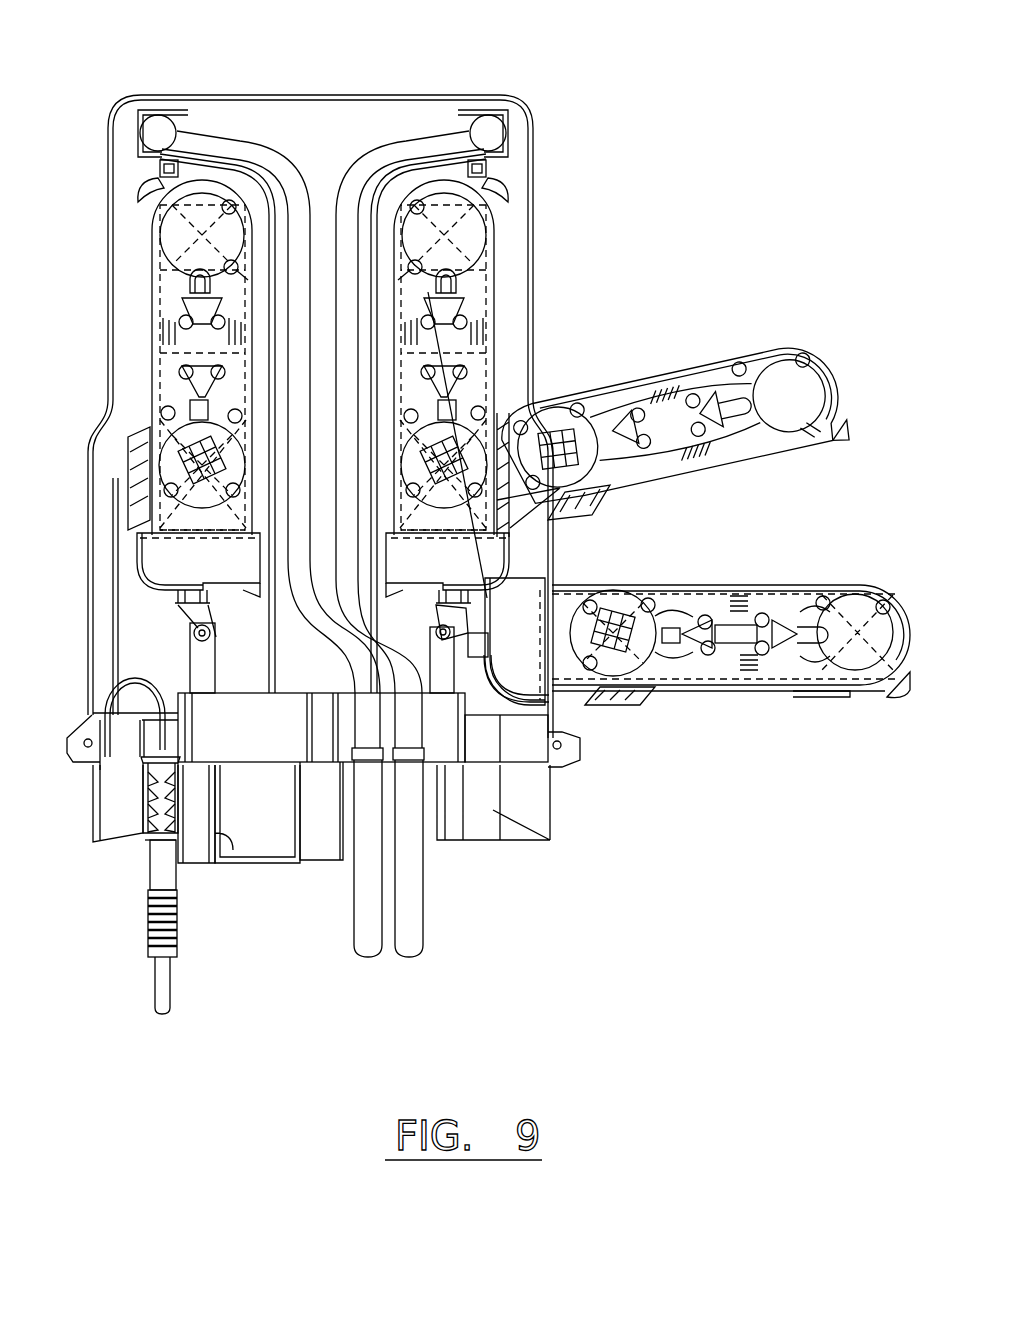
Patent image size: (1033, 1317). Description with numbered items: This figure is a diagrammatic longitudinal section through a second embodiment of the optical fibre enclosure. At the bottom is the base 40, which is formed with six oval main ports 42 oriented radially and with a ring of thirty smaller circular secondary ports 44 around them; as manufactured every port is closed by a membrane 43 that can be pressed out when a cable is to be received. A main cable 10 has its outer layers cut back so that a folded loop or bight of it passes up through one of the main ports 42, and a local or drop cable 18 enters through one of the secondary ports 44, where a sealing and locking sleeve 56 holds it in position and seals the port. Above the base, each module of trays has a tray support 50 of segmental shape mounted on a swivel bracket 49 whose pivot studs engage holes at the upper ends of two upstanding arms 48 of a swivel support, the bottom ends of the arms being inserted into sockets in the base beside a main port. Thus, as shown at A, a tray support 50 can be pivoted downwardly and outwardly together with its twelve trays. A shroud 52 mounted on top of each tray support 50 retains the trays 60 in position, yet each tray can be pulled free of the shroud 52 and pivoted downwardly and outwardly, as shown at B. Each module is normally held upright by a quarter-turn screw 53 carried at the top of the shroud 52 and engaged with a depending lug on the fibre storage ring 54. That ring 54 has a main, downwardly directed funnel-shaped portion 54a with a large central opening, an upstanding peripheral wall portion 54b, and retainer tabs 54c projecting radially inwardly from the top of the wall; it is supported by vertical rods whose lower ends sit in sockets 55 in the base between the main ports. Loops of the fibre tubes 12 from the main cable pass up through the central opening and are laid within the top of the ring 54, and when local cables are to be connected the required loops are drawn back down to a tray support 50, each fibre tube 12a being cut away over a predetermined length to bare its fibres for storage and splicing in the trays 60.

The main cable 10 is at (428, 968).
The fibre tubes 12 is at (401, 146).
The fibre tube 12a is at (375, 325).
The local cable 18 is at (160, 990).
The base 40 is at (560, 772).
The main port 42 is at (437, 853).
The membrane 43 is at (280, 860).
The secondary port 44 is at (505, 818).
The upstanding arm 48 is at (437, 649).
The swivel bracket 49 is at (441, 611).
The tray support 50 is at (520, 553).
The shroud 52 is at (212, 192).
The quarter-turn screw 53 is at (488, 168).
The fibre storage ring 54 is at (518, 127).
The funnel-shaped portion 54a is at (253, 190).
The peripheral wall portion 54b is at (500, 142).
The retainer tab 54c is at (463, 108).
The socket 55 is at (428, 590).
The sealing and locking sleeve 56 is at (150, 916).
The tray 60 is at (514, 355).
The pivoted tray support position A is at (817, 581).
The pivoted tray position B is at (757, 341).